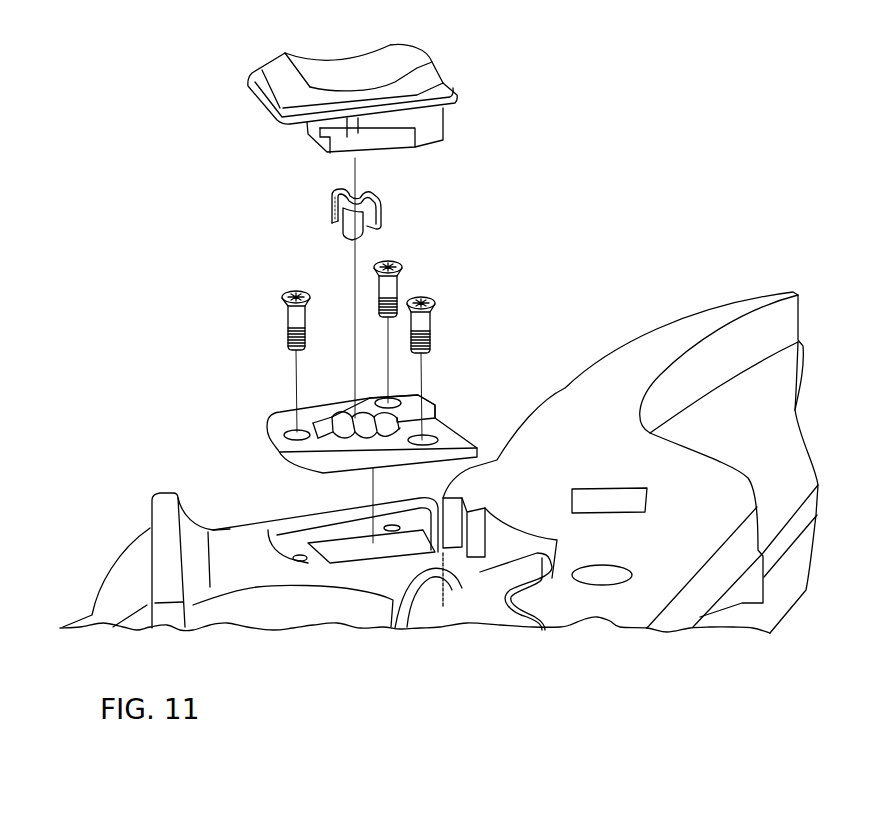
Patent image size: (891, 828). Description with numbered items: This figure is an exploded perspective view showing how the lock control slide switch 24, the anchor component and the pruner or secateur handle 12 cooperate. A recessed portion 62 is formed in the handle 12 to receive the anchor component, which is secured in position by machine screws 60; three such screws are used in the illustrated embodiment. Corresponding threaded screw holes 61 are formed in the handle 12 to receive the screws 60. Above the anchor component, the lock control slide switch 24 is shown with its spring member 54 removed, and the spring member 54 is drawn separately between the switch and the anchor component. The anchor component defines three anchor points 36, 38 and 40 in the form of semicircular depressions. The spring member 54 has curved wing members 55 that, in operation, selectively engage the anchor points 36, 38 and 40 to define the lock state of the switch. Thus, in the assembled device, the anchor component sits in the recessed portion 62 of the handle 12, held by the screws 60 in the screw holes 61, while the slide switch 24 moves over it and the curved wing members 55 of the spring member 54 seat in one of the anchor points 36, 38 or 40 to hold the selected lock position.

The handle 12 is at (117, 580).
The lock control slide switch 24 is at (273, 70).
The anchor point 36 is at (342, 418).
The anchor point 38 is at (365, 417).
The anchor point 40 is at (398, 421).
The spring member 54 is at (333, 222).
The curved wing members 55 is at (333, 192).
The machine screws 60 is at (290, 318).
The threaded screw holes 61 is at (298, 555).
The recessed portion 62 is at (313, 517).